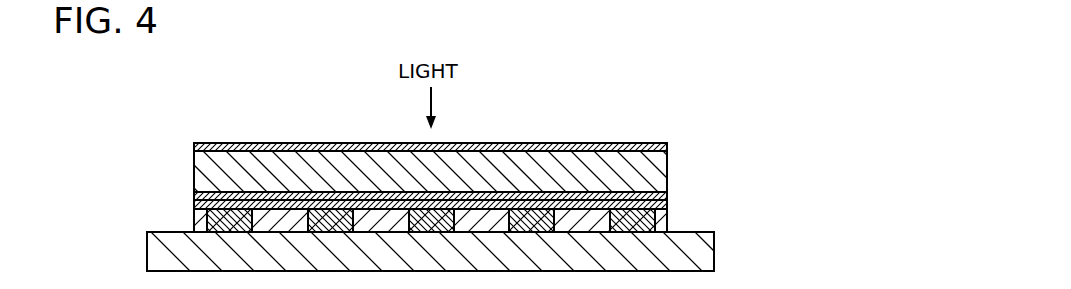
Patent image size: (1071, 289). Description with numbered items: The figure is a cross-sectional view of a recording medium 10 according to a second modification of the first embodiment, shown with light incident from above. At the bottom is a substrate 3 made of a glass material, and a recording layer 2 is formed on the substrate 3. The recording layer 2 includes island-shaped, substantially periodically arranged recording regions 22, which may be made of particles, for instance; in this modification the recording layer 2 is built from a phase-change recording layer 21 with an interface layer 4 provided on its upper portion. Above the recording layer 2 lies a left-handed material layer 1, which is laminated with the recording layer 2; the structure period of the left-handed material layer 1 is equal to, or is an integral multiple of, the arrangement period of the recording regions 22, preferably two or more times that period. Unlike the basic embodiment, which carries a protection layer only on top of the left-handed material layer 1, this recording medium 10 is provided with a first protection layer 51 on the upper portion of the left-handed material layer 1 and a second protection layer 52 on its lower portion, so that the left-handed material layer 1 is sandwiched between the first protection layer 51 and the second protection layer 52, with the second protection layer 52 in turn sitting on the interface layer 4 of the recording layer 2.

The recording medium 10 is at (716, 91).
The left-handed material layer 1 is at (663, 170).
The first protection layer 51 is at (637, 148).
The second protection layer 52 is at (194, 195).
The recording layer 2 is at (760, 163).
The interface layer 4 is at (668, 205).
The phase-change recording layer 21 is at (477, 163).
The recording regions 22 is at (536, 214).
The substrate 3 is at (705, 250).